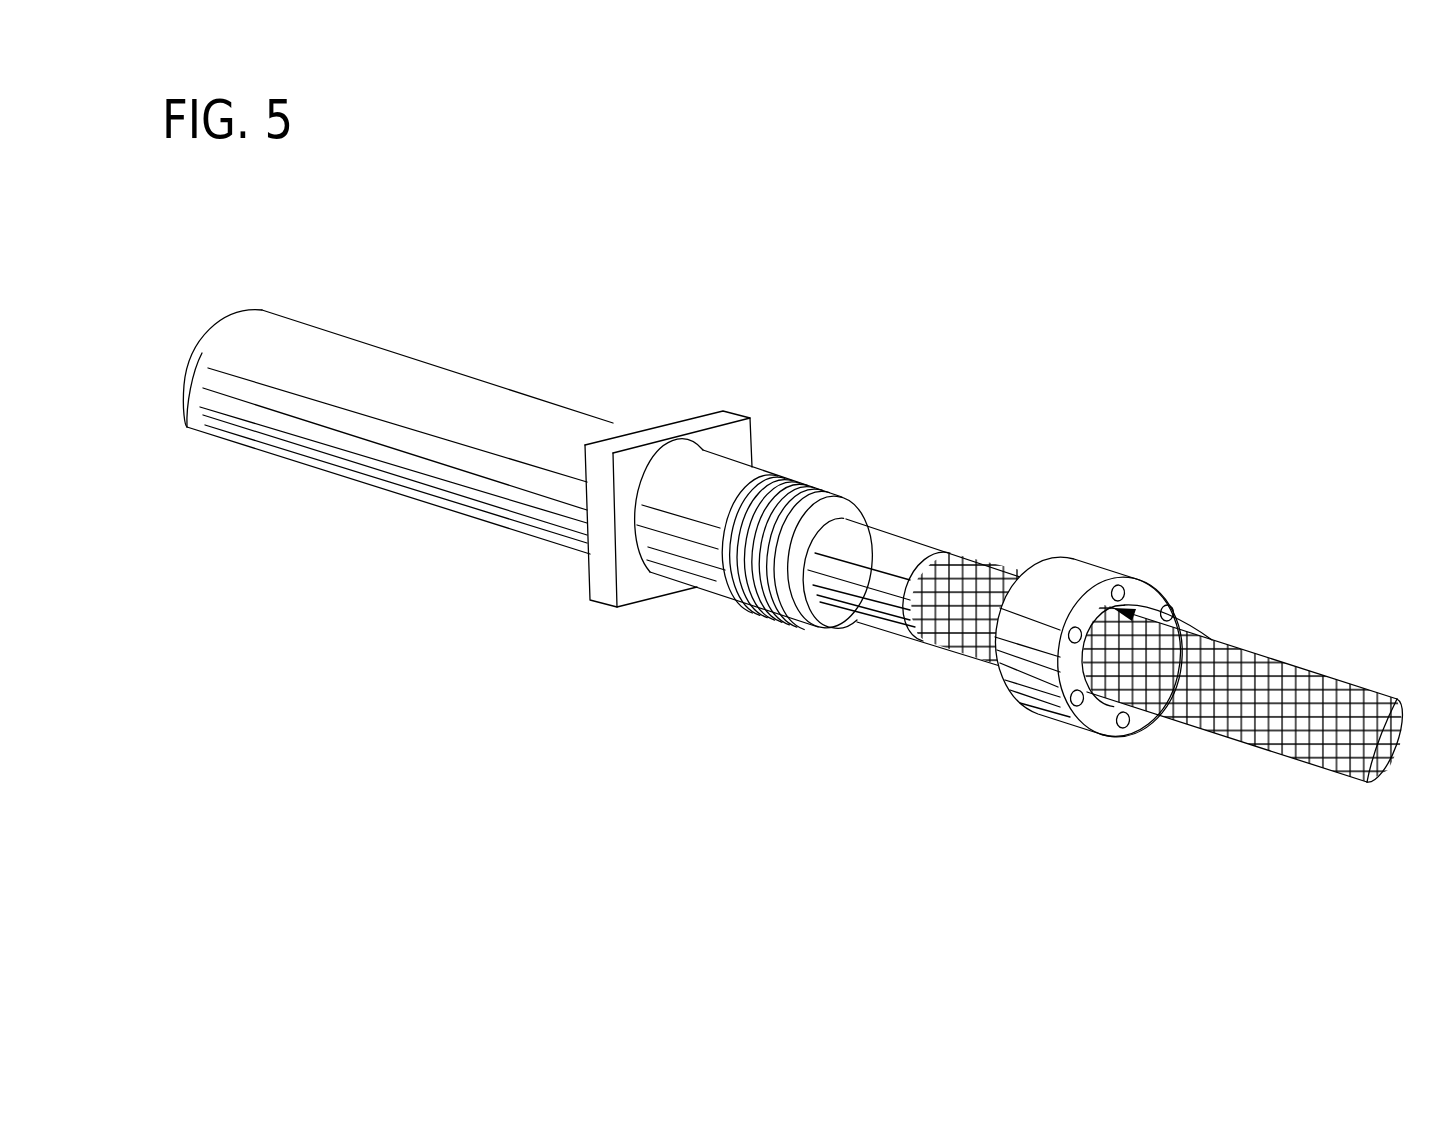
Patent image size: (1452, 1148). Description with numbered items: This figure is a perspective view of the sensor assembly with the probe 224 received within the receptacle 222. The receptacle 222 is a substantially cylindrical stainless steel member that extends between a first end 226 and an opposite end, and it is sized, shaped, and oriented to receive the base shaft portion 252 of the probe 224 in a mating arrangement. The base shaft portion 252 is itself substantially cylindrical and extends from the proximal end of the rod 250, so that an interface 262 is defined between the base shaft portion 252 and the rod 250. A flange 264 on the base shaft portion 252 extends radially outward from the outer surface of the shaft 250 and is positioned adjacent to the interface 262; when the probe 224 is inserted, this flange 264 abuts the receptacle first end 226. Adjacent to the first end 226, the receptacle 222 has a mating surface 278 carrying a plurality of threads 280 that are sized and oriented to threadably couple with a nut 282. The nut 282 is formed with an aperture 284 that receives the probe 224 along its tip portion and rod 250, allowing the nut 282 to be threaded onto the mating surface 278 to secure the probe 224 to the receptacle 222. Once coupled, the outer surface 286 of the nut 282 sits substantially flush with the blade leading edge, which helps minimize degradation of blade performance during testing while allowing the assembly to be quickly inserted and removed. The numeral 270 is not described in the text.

The receptacle 222 is at (462, 364).
The probe 224 is at (1278, 775).
The first end 226 is at (843, 502).
The rod 250 is at (1197, 716).
The base shaft portion 252 is at (887, 543).
The interface 262 is at (938, 553).
The flange 264 is at (788, 612).
The mounting flange 270 is at (725, 417).
The mating surface 278 is at (805, 469).
The threads 280 is at (728, 587).
The nut 282 is at (1087, 573).
The aperture 284 is at (1212, 640).
The outer surface 286 is at (1088, 718).